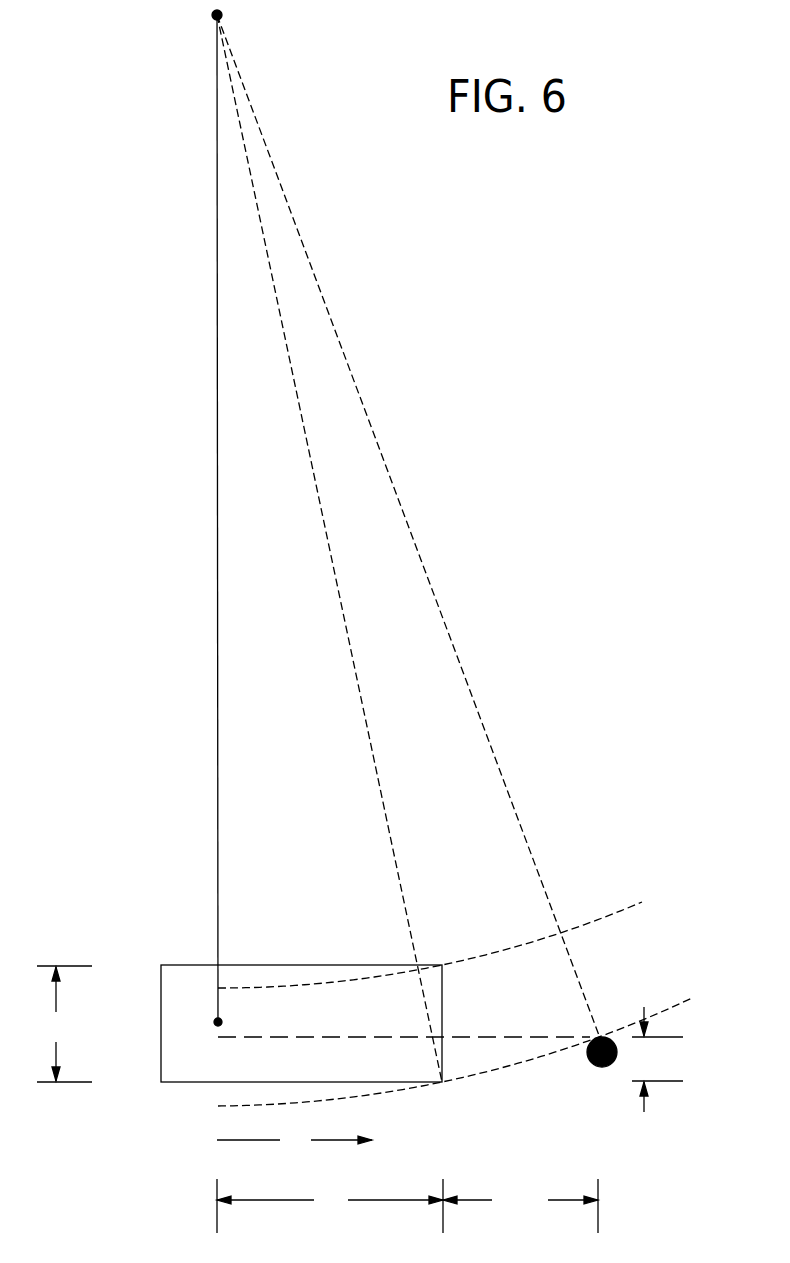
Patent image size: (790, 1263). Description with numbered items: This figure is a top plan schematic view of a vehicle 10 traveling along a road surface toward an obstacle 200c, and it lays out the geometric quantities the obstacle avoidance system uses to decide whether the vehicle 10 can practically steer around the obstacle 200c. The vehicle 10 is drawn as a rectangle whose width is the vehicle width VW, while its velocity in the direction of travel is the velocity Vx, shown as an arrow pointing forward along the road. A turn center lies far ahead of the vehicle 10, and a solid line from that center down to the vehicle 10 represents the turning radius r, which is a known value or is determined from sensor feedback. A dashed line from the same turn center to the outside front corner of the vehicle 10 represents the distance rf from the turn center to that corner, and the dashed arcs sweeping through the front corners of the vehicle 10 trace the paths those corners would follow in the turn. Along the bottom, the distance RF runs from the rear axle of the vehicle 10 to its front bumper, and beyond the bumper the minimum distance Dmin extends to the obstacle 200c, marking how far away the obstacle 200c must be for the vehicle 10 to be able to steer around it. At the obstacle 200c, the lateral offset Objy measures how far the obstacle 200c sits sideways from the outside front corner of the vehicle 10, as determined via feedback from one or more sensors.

The vehicle 10 is at (177, 944).
The obstacle 200c is at (600, 1067).
The turning radius r is at (205, 518).
The distance from turn center to outside front corner rf is at (408, 548).
The vehicle width VW is at (64, 1024).
The vehicle velocity in direction of travel Vx is at (294, 1135).
The distance from rear axle to front bumper RF is at (330, 1206).
The minimum distance Dmin is at (520, 1206).
The lateral offset of obstacle Objy is at (655, 1059).